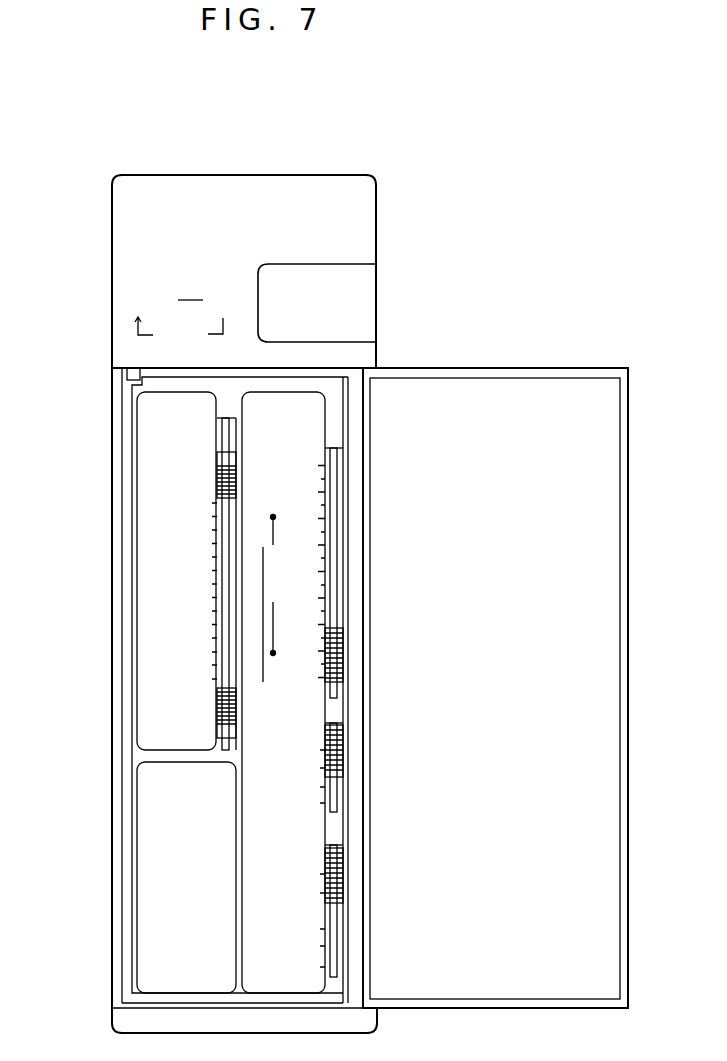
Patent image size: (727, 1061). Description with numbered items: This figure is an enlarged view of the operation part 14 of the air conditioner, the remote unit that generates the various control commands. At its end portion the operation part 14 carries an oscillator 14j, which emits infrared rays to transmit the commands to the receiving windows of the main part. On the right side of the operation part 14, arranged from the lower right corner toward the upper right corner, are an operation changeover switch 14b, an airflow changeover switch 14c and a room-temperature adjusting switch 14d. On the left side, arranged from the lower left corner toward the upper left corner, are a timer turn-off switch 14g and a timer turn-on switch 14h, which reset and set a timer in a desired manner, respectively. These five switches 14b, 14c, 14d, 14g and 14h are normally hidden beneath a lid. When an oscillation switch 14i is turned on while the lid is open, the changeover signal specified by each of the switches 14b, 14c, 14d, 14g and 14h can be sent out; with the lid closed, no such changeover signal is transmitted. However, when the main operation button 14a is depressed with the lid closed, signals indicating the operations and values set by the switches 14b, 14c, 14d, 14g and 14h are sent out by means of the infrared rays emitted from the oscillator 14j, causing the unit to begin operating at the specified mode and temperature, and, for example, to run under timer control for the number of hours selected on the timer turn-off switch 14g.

The operation part 14 is at (378, 222).
The main operation button 14a is at (378, 318).
The operation changeover switch 14b is at (320, 874).
The airflow changeover switch 14c is at (320, 750).
The room-temperature adjusting switch 14d is at (343, 648).
The timer turn-off switch 14g is at (217, 733).
The timer turn-on switch 14h is at (217, 455).
The oscillation switch 14i is at (126, 373).
The oscillator 14j is at (160, 175).